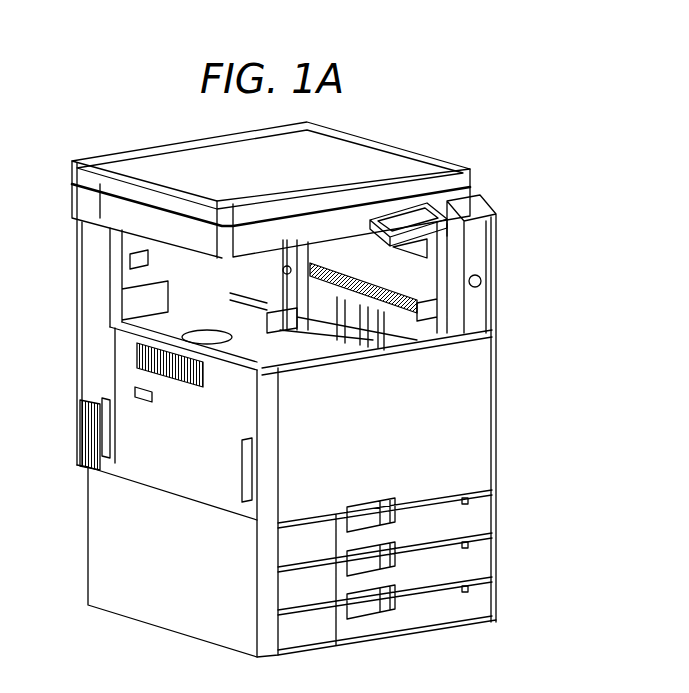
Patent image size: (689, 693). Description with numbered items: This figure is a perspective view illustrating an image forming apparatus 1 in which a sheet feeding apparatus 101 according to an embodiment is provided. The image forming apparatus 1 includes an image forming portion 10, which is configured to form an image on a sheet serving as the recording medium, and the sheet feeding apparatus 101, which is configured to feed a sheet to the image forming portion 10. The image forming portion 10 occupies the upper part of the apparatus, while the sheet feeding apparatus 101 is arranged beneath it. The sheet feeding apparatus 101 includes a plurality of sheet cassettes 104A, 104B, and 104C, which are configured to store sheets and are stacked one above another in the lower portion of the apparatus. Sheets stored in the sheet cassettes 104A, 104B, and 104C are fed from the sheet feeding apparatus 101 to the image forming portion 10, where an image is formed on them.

The image forming apparatus 1 is at (432, 144).
The image forming portion 10 is at (505, 405).
The sheet feeding apparatus 101 is at (584, 514).
The sheet cassette 104A is at (483, 508).
The sheet cassette 104B is at (483, 554).
The sheet cassette 104C is at (483, 601).